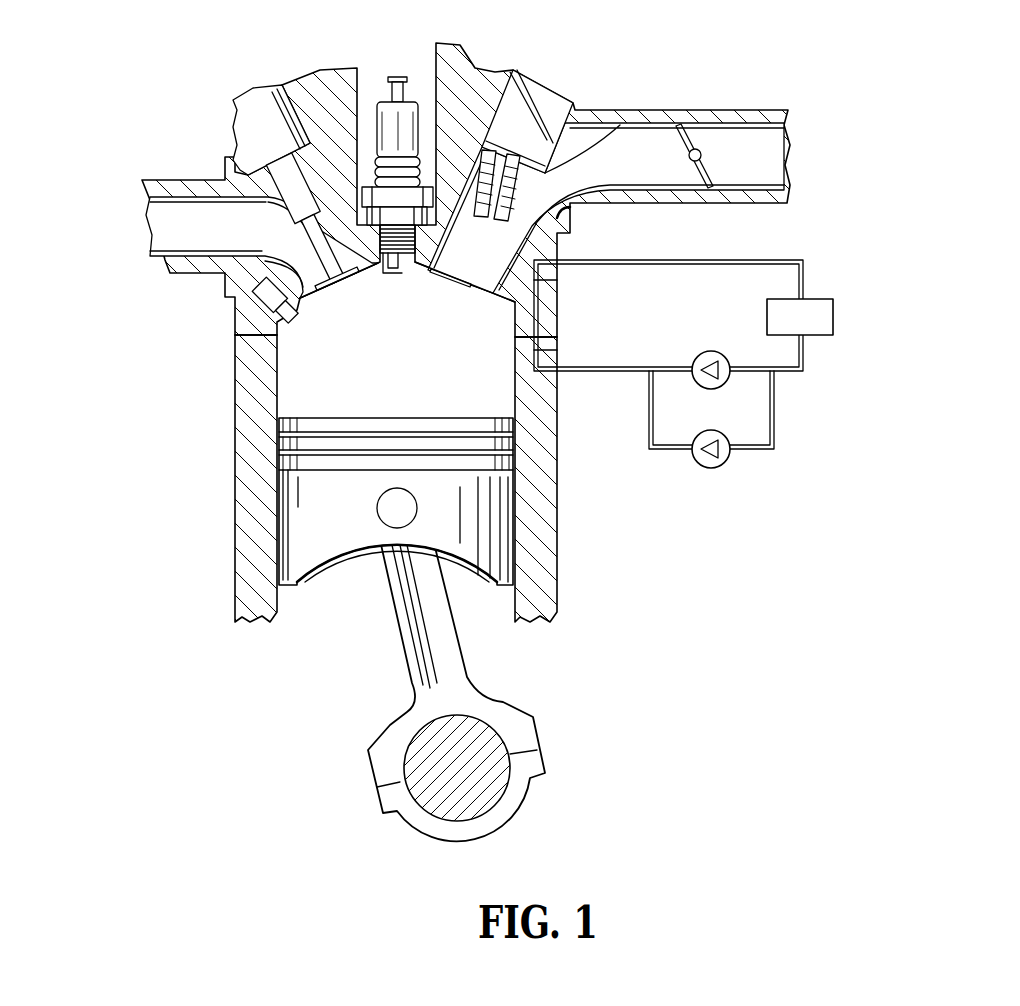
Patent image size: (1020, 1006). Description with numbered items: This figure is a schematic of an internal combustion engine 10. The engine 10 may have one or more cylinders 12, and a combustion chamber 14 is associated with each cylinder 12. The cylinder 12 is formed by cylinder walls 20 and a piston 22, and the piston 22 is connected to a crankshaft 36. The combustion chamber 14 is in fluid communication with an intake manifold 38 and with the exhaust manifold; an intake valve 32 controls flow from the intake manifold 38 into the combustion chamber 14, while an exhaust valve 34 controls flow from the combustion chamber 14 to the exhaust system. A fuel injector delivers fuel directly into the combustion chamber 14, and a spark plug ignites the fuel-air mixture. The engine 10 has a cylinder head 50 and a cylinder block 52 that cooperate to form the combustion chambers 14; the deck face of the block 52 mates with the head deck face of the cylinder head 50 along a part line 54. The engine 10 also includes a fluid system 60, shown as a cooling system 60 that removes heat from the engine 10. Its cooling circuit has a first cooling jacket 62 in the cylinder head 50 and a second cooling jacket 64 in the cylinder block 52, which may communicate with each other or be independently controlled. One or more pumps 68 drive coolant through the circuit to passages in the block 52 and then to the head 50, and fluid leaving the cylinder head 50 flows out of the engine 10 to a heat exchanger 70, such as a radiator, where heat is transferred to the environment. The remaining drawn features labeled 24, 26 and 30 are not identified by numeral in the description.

The internal combustion engine 10 is at (165, 82).
The cylinder 12 is at (314, 372).
The combustion chamber 14 is at (387, 354).
The cylinder walls 20 is at (513, 387).
The piston 22 is at (360, 548).
The crankshaft 24 is at (457, 768).
The exhaust port 26 is at (733, 105).
The intake port 30 is at (157, 175).
The intake valve 32 is at (530, 186).
The exhaust valve 34 is at (303, 249).
The crankshaft 36 is at (265, 300).
The intake manifold 38 is at (400, 76).
The cylinder head 50 is at (560, 253).
The cylinder block 52 is at (557, 568).
The part line 54 is at (236, 337).
The fluid system 60 is at (733, 258).
The first cooling jacket 62 is at (558, 280).
The second cooling jacket 64 is at (558, 350).
The pump 68 is at (711, 350).
The heat exchanger 70 is at (833, 318).